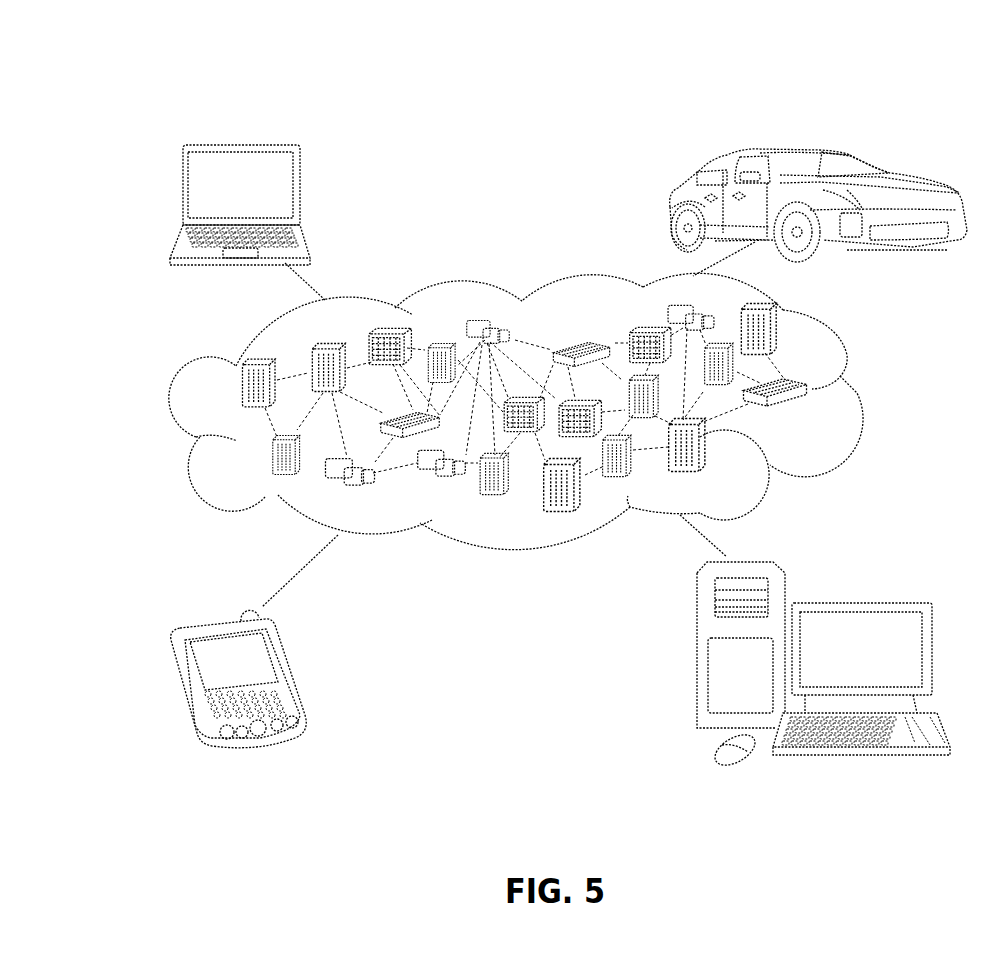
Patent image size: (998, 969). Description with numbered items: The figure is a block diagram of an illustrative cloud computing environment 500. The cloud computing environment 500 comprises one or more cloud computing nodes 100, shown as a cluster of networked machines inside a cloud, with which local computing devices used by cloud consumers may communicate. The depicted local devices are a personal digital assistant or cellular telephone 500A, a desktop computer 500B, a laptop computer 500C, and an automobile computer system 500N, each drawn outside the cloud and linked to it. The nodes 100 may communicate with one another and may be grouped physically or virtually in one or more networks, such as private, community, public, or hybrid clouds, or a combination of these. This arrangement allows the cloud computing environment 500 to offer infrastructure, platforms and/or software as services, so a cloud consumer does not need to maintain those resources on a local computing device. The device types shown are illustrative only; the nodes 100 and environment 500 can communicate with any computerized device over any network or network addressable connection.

The cloud computing environment 500 is at (113, 58).
The cloud computing nodes 100 is at (812, 414).
The personal digital assistant (PDA) or cellular telephone 500A is at (292, 671).
The desktop computer 500B is at (858, 601).
The laptop computer 500C is at (301, 192).
The automobile computer system 500N is at (672, 204).